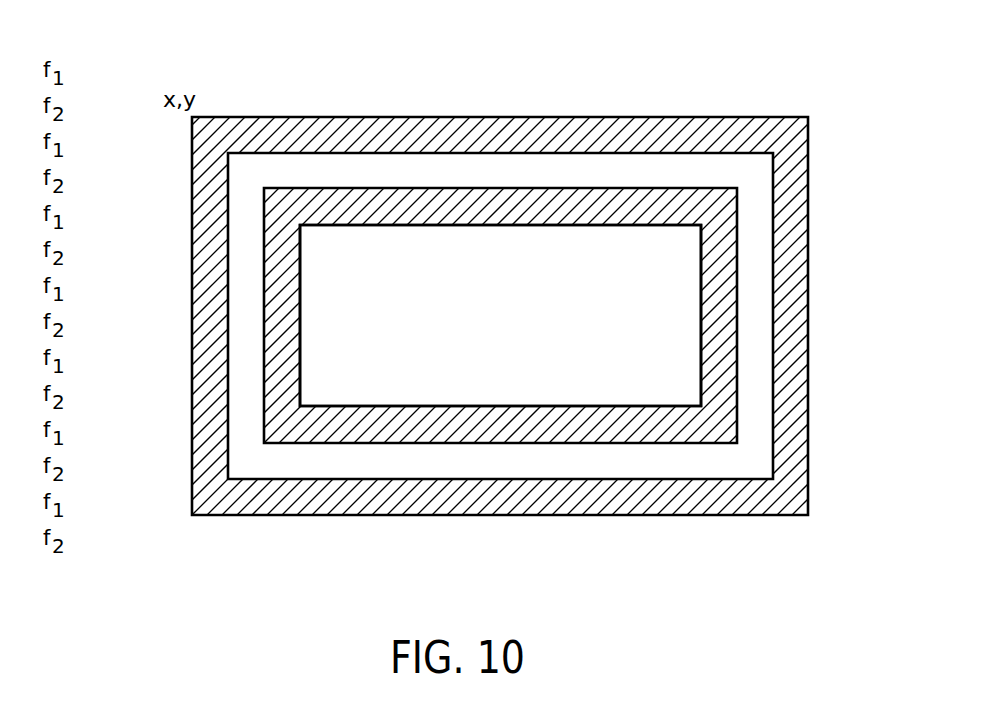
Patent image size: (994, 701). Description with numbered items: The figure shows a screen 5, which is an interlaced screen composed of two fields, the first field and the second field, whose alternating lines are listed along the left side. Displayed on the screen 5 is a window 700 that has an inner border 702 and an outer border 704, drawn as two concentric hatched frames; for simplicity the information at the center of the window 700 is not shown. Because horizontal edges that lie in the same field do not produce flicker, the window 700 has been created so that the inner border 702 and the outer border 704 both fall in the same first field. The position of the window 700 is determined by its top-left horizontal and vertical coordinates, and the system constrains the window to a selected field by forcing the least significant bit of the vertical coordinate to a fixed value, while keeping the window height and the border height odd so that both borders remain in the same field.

The screen 5 is at (885, 48).
The window 700 is at (658, 282).
The inner border 702 is at (405, 405).
The outer border 704 is at (521, 117).